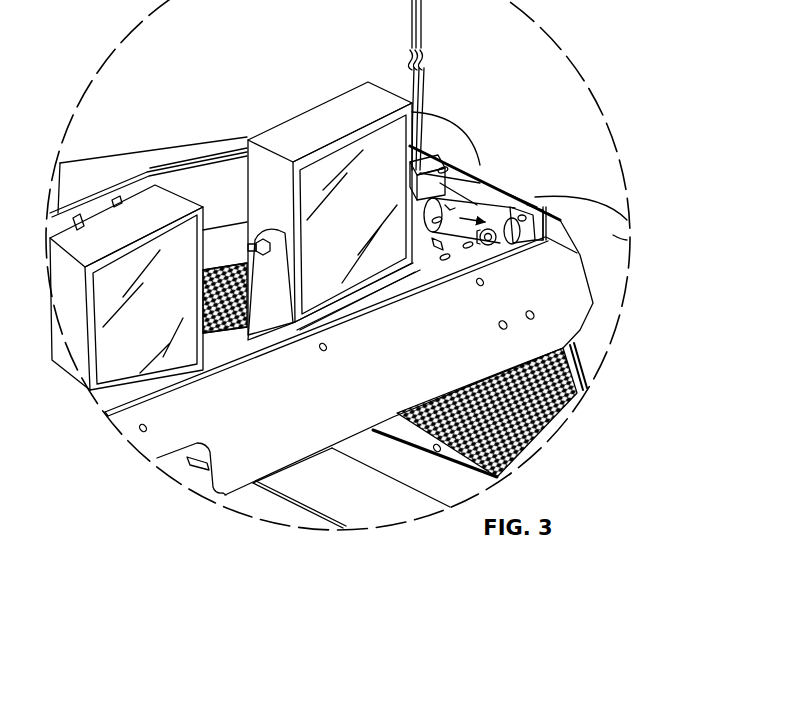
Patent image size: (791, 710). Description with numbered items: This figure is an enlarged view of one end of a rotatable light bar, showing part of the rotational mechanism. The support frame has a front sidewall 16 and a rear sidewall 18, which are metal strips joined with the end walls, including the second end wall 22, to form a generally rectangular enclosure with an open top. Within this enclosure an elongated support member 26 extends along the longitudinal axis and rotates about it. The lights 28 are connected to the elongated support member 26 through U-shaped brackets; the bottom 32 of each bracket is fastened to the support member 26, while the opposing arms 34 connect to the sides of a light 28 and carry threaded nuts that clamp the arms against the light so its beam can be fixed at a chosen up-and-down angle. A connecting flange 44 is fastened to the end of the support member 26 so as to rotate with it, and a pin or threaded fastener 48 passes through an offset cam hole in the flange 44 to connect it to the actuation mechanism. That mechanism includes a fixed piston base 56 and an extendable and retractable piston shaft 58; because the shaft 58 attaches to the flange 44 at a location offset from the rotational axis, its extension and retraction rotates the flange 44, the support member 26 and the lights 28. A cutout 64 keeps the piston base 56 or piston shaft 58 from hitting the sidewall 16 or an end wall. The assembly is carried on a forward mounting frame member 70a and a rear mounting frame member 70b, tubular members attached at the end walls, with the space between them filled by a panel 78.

The front sidewall 16 is at (331, 405).
The rear sidewall 18 is at (97, 197).
The second end wall 22 is at (470, 207).
The elongated support member 26 is at (235, 358).
The light 28 is at (311, 98).
The bottom of the U-shaped bracket 32 is at (372, 300).
The opposing arm 34 is at (275, 310).
The connecting flange 44 is at (503, 210).
The pin or threaded fastener 48 is at (486, 246).
The fixed piston base 56 is at (423, 177).
The extendable and retractable piston shaft 58 is at (488, 213).
The cutout 64 is at (438, 242).
The forward mounting frame member 70a is at (613, 237).
The rear mounting frame member 70b is at (440, 123).
The panel 78 is at (577, 392).